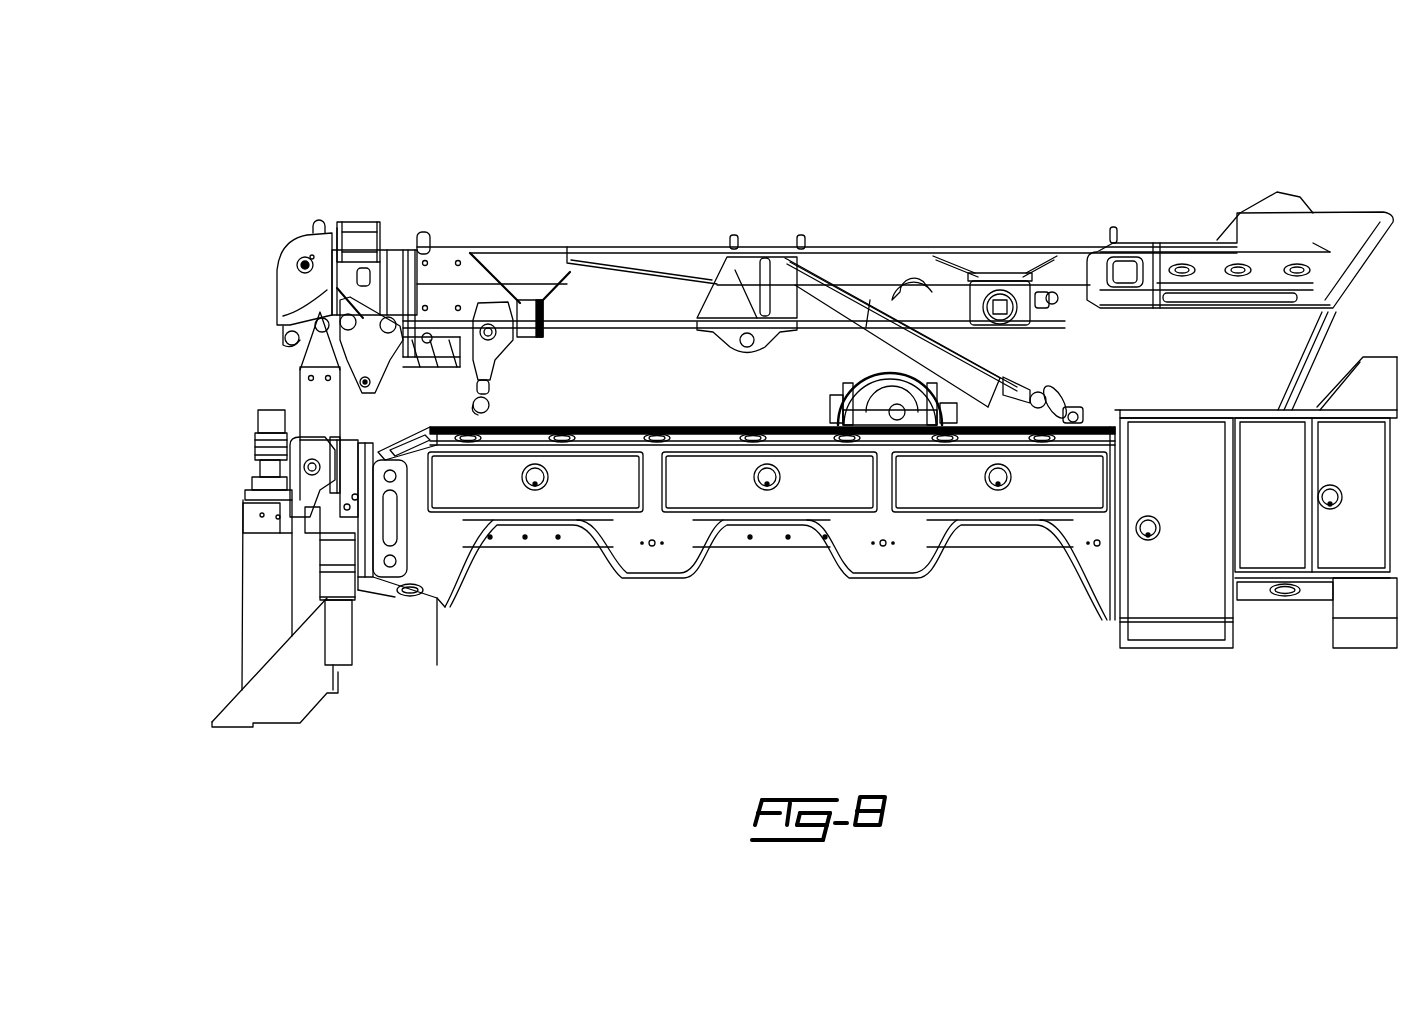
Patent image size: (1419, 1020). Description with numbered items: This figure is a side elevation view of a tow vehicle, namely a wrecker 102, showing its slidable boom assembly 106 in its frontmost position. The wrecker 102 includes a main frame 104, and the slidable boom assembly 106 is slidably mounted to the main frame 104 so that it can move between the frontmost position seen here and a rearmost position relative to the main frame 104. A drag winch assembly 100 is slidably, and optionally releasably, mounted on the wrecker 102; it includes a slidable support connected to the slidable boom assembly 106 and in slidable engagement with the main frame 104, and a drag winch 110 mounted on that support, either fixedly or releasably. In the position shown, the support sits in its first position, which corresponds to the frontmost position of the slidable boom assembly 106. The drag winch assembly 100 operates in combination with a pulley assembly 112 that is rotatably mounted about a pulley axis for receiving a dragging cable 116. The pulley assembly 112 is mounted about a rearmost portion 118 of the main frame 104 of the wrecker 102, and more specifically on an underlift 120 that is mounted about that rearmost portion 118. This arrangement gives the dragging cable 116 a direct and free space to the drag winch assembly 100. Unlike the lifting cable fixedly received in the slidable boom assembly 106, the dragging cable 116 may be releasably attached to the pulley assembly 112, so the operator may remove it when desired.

The drag winch assembly 100 is at (790, 400).
The wrecker 102 is at (750, 178).
The main frame 104 is at (863, 516).
The slidable boom assembly 106 is at (1022, 197).
The drag winch 110 is at (885, 390).
The pulley assembly 112 is at (225, 478).
The dragging cable 116 is at (300, 452).
The rearmost portion 118 is at (240, 378).
The underlift 120 is at (310, 560).